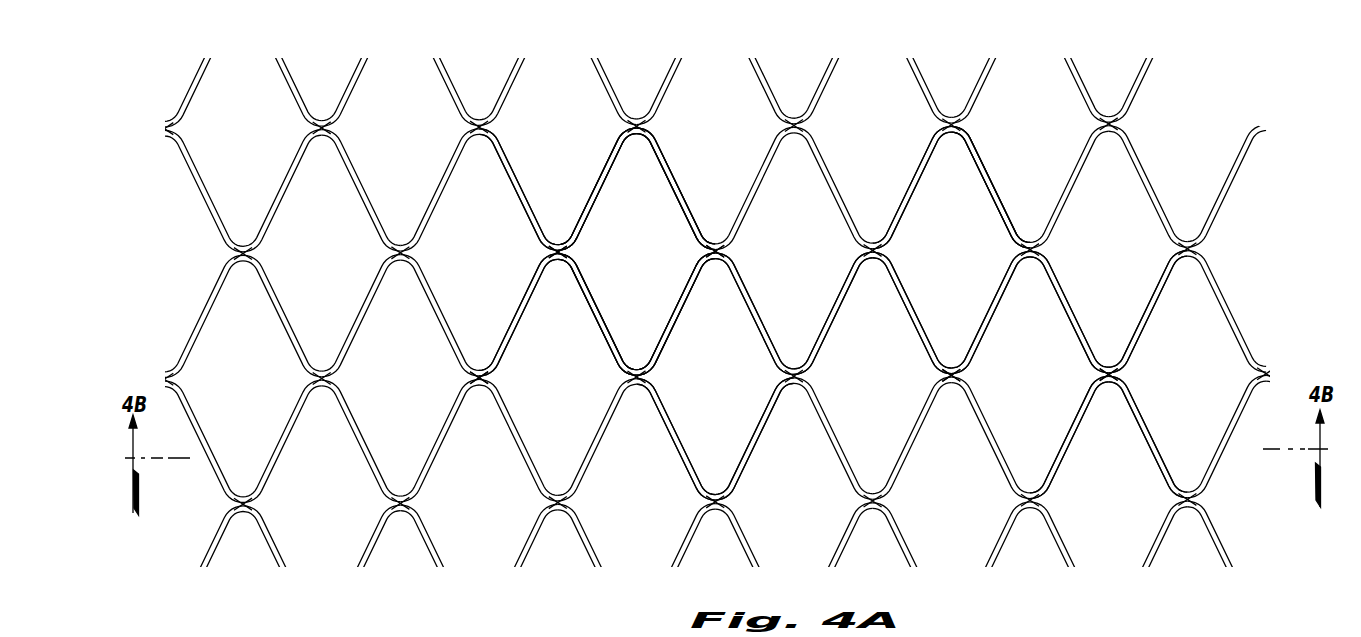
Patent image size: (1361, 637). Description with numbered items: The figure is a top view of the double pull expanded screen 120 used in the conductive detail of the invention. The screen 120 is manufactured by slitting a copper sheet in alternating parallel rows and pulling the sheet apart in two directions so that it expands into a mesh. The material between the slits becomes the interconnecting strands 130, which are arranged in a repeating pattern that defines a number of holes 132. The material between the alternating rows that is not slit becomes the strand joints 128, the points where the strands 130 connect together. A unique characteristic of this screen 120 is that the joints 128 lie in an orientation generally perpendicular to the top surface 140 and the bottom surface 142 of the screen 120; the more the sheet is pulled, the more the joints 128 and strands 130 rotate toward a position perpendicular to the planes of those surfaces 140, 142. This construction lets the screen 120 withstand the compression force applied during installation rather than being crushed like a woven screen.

The double pull expanded screen 120 is at (1259, 229).
The strand joints 128 is at (722, 252).
The interconnecting strands 130 is at (682, 181).
The holes 132 is at (657, 274).
The top surface 140 is at (558, 252).
The bottom surface 142 is at (559, 258).